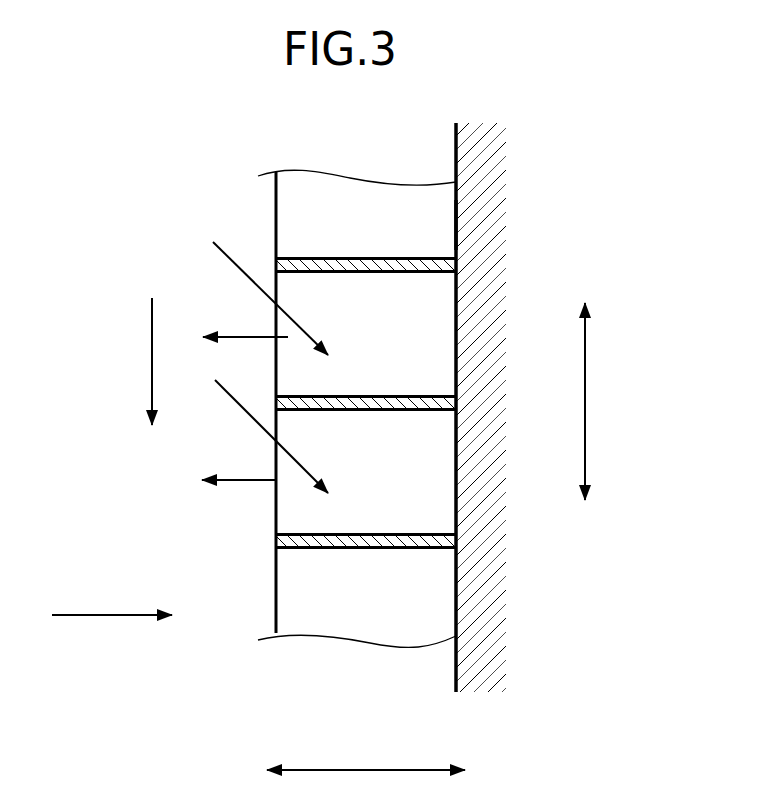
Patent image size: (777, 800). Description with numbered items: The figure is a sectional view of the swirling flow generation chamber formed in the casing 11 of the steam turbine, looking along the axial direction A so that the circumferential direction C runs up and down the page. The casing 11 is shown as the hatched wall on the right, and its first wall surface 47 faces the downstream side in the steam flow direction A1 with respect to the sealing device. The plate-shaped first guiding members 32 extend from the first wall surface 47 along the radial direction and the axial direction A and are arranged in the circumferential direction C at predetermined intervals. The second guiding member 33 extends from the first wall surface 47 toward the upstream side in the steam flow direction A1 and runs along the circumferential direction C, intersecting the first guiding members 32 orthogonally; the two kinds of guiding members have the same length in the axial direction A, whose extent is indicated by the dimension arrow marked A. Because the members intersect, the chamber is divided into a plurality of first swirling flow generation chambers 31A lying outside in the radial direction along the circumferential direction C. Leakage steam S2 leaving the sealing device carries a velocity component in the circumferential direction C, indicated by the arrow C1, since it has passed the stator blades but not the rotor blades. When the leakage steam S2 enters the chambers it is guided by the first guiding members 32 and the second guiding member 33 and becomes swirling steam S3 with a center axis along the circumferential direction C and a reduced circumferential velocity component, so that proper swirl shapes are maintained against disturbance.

The casing 11 is at (560, 540).
The first wall surface 47 is at (457, 217).
The first guiding member 32 is at (412, 257).
The second guiding member 33 is at (276, 589).
The first swirling flow generation chamber 31A is at (387, 232).
The leakage steam S2 is at (241, 268).
The swirling steam S3 is at (233, 336).
The direction C1 is at (152, 354).
The steam flow direction A1 is at (113, 617).
The circumferential direction C is at (598, 401).
The axial direction A is at (366, 754).